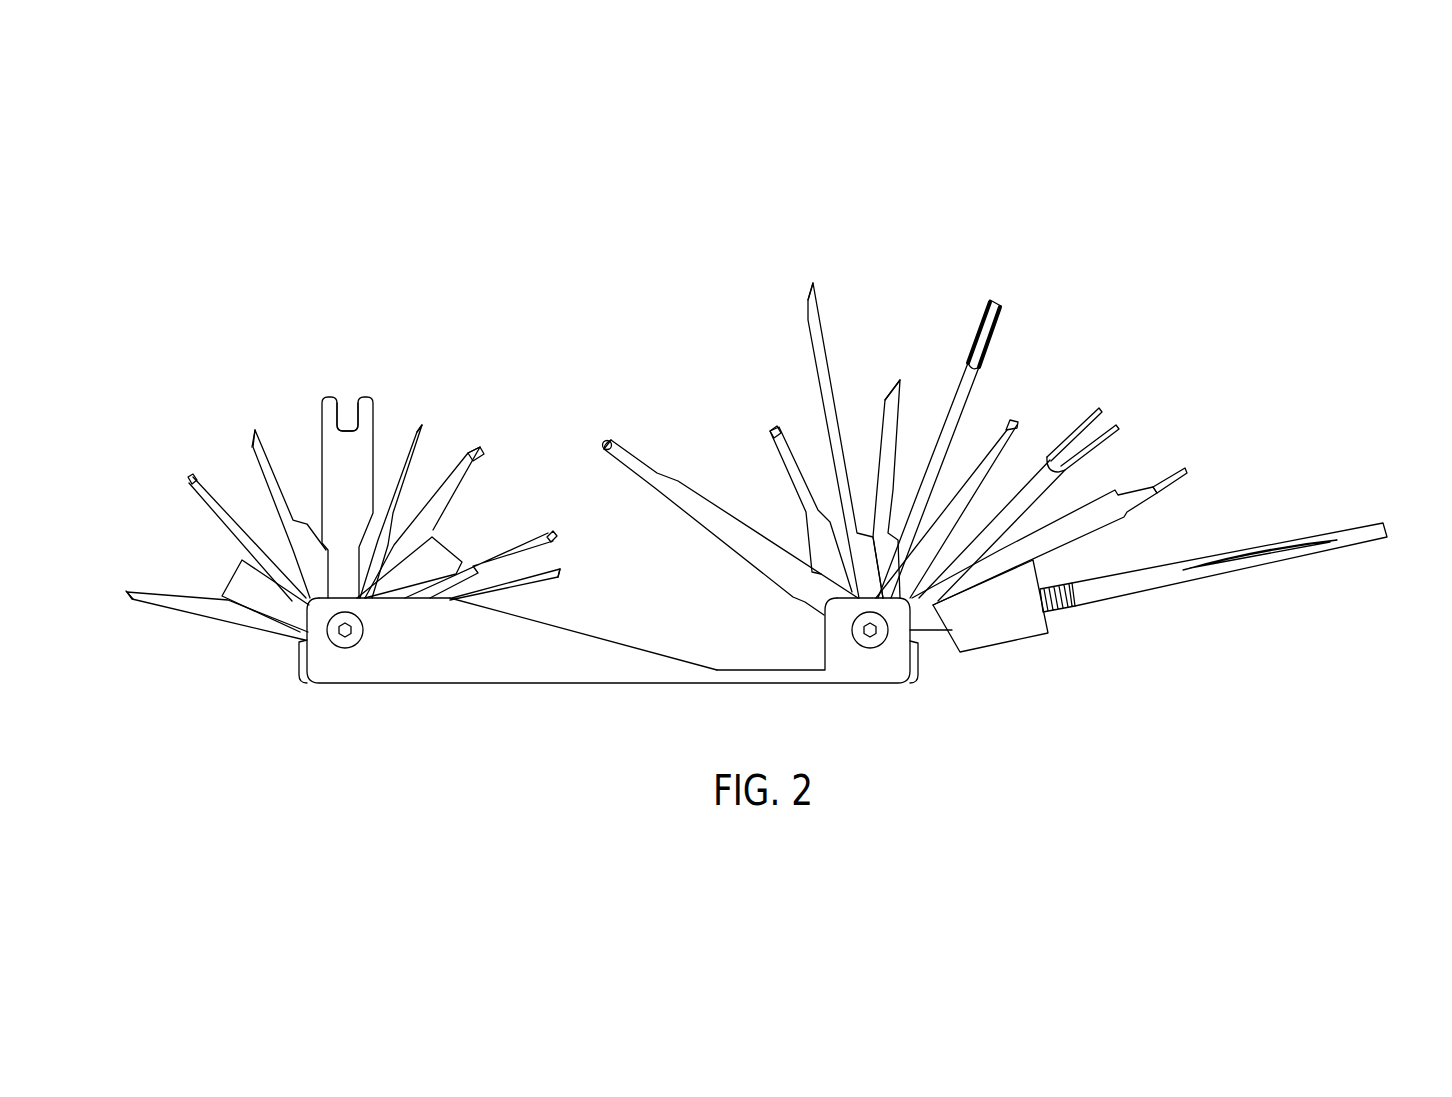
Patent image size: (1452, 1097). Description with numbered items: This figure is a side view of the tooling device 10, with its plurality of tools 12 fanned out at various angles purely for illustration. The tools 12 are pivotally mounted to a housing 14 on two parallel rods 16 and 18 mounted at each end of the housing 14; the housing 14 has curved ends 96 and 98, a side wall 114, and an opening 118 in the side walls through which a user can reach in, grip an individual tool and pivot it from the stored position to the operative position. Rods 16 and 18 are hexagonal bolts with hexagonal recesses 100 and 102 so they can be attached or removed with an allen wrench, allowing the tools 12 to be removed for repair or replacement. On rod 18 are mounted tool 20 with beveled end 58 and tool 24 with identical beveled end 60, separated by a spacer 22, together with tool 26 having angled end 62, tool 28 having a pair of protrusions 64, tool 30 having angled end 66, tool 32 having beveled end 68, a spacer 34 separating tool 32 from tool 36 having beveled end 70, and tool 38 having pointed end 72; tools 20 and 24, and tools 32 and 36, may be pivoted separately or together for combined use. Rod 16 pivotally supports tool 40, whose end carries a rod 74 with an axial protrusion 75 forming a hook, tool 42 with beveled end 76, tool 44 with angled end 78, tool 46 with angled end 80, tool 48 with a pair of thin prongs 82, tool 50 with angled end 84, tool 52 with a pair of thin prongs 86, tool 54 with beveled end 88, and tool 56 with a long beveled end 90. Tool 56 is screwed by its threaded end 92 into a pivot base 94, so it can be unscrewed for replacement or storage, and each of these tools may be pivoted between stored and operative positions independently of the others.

The tooling device 10 is at (431, 756).
The tools 12 is at (220, 366).
The housing 14 is at (548, 672).
The rod 16 is at (855, 628).
The rod 18 is at (362, 636).
The tool 20 is at (212, 608).
The spacer 22 is at (242, 577).
The tool 24 is at (207, 497).
The tool 26 is at (268, 470).
The tool 28 is at (358, 450).
The tool 30 is at (407, 460).
The tool 32 is at (460, 472).
The spacer 34 is at (440, 553).
The tool 36 is at (556, 548).
The tool 38 is at (530, 583).
The tool 40 is at (718, 523).
The tool 42 is at (807, 515).
The tool 44 is at (815, 342).
The tool 46 is at (893, 422).
The tool 48 is at (962, 403).
The tool 50 is at (1005, 455).
The tool 52 is at (1038, 487).
The tool 54 is at (1093, 527).
The tool 56 is at (1140, 577).
The beveled end 58 is at (130, 592).
The beveled end 60 is at (192, 477).
The angled end 62 is at (252, 447).
The protrusions 64 is at (338, 400).
The angled end 66 is at (417, 435).
The beveled end 68 is at (482, 447).
The beveled end 70 is at (556, 532).
The pointed end 72 is at (558, 573).
The rod 74 is at (615, 442).
The protrusion 75 is at (605, 442).
The beveled end 76 is at (772, 428).
The angled end 78 is at (812, 302).
The angled end 80 is at (887, 400).
The thin prongs 82 is at (990, 300).
The angled end 84 is at (1013, 420).
The thin prongs 86 is at (1100, 410).
The beveled end 88 is at (1185, 470).
The long beveled end 90 is at (1338, 540).
The threaded end 92 is at (1060, 593).
The pivot base 94 is at (1010, 633).
The curved end 96 is at (300, 660).
The curved end 98 is at (918, 663).
The hexagonal recess 100 is at (345, 650).
The hexagonal recess 102 is at (870, 650).
The side wall 114 is at (627, 663).
The opening 118 is at (720, 640).